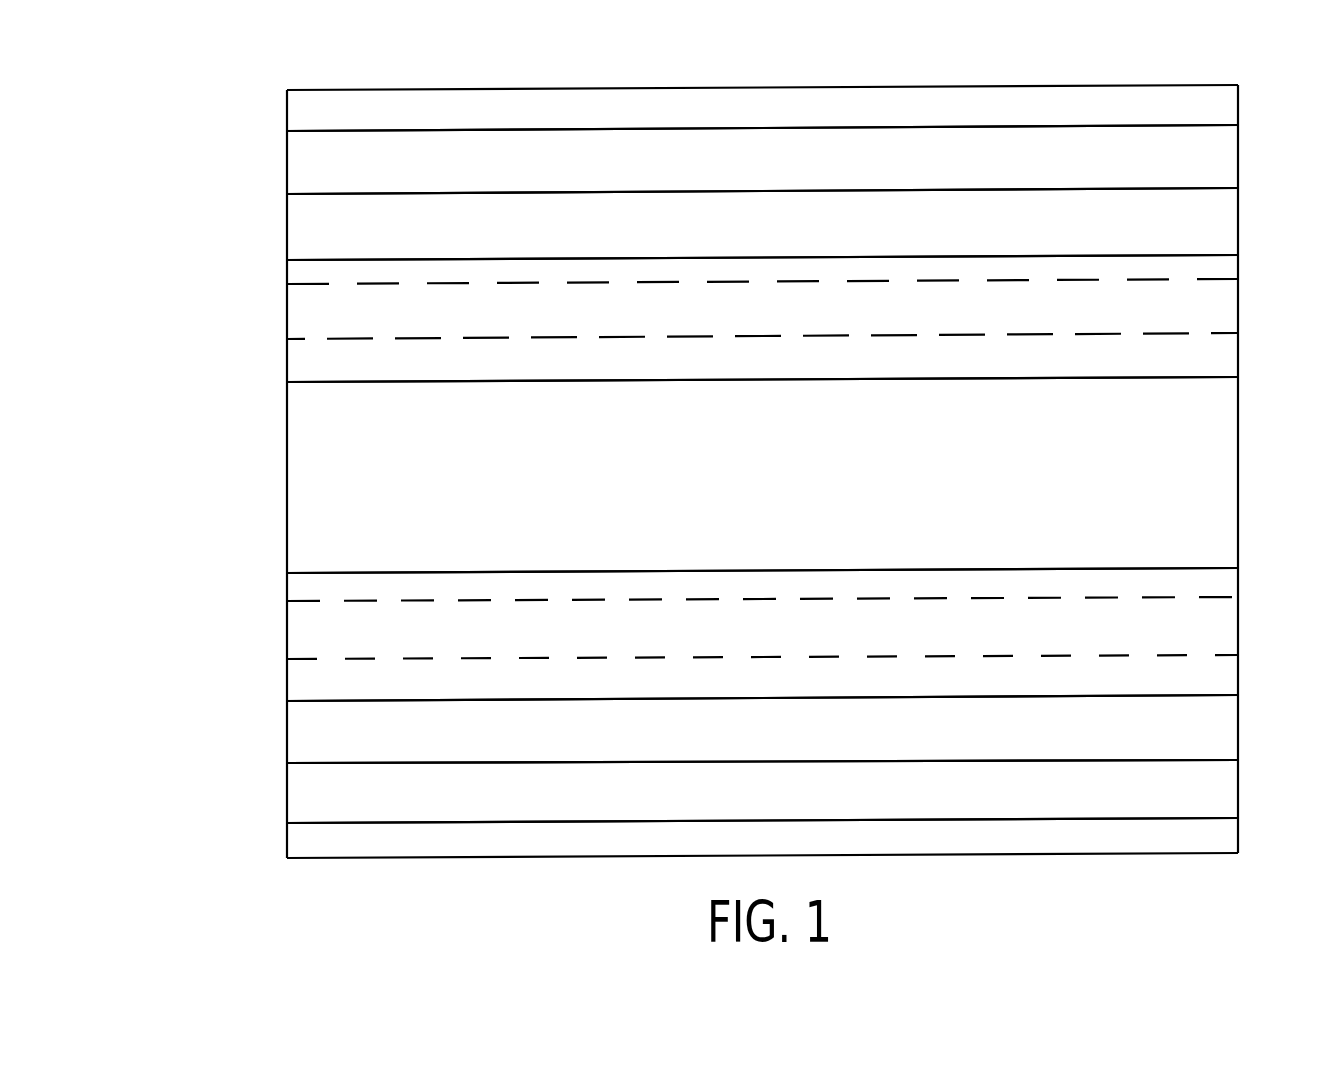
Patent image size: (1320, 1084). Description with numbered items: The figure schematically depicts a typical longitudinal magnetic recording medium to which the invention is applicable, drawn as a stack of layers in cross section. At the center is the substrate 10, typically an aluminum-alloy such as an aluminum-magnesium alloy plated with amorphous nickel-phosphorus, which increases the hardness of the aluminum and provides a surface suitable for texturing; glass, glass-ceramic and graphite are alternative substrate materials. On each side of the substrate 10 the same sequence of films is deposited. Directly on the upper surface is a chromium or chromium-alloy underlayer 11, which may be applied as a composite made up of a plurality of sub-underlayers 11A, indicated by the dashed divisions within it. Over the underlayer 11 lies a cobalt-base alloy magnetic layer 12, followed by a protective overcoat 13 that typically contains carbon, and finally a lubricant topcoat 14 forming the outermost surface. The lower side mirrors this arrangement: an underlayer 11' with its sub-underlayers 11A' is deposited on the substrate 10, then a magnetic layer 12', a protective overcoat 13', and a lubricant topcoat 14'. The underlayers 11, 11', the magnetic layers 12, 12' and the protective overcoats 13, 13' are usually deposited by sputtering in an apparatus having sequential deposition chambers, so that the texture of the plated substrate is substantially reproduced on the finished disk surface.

The substrate 10 is at (778, 488).
The underlayer 11 is at (794, 318).
The sub-underlayers 11A is at (703, 317).
The magnetic layer 12 is at (762, 224).
The protective overcoat 13 is at (762, 159).
The lubricant topcoat 14 is at (762, 108).
The underlayer 11' is at (801, 634).
The sub-underlayers 11A' is at (704, 634).
The magnetic layer 12' is at (762, 729).
The protective overcoat 13' is at (762, 791).
The lubricant topcoat 14' is at (762, 838).